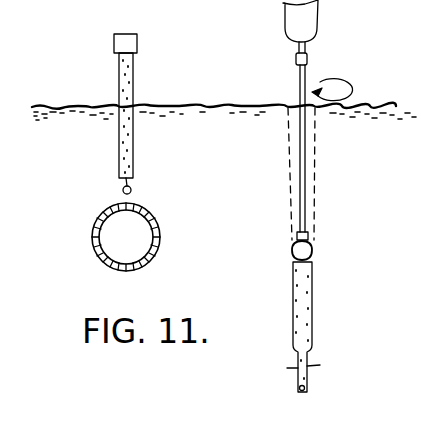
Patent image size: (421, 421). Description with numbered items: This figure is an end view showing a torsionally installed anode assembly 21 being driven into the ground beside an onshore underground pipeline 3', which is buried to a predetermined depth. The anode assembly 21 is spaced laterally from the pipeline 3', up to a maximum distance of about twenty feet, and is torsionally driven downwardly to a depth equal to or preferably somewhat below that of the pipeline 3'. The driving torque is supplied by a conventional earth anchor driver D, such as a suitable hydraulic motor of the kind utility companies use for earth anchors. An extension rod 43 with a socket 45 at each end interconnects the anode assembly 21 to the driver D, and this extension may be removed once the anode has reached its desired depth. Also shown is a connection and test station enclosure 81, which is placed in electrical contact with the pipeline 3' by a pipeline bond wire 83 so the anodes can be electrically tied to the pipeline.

The connection and test station enclosure 81 is at (138, 75).
The pipeline bond wire 83 is at (122, 195).
The pipeline 3' is at (99, 246).
The earth anchor driver D is at (318, 30).
The extension rod 43 is at (305, 193).
The socket 45 is at (308, 59).
The torsionally installed anode assembly 21 is at (292, 327).